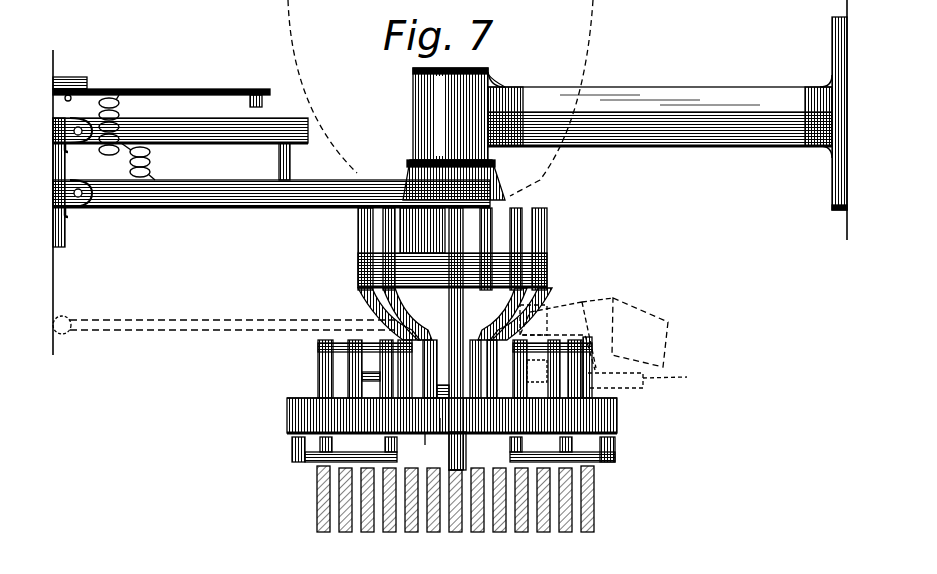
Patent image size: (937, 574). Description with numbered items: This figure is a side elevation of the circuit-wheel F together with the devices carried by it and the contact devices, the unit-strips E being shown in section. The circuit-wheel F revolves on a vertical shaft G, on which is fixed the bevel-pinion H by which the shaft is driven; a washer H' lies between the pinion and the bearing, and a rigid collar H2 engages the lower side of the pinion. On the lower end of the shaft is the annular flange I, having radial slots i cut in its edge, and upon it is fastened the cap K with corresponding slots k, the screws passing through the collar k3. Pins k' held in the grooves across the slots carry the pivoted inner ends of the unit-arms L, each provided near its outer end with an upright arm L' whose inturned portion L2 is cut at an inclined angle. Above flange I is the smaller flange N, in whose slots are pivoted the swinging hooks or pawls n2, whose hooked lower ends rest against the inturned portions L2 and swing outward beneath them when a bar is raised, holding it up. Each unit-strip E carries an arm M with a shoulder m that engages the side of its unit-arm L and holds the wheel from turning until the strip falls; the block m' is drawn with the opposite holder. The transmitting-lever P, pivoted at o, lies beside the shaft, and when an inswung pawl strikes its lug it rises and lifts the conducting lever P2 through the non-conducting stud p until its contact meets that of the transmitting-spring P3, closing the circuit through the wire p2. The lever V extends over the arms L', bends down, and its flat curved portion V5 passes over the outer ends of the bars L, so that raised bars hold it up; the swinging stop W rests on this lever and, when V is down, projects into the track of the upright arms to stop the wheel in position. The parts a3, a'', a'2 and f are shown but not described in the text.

The transmitting-spring P3 is at (161, 85).
The conducting lever P2 is at (180, 142).
The transmitting-lever P is at (271, 206).
The pin or stud p is at (263, 101).
The wire p2 is at (119, 103).
The pivot o is at (80, 180).
The hub shoulder a3 is at (489, 74).
The hub top a'' is at (442, 93).
The shaft arm a'2 is at (667, 113).
The bevel-pinion H is at (440, 119).
The washer H' is at (469, 177).
The rigid collar H2 is at (413, 212).
The second flange N is at (358, 265).
The swinging hook or pawl n2 is at (537, 314).
The circuit-wheel F is at (548, 276).
The central pin f is at (460, 228).
The inturned portion L2 is at (566, 331).
The swinging stop W is at (660, 320).
The pin k' is at (615, 370).
The flat curved portion V5 is at (678, 377).
The radial slot k is at (537, 377).
The collar k3 is at (483, 369).
The shaft G is at (429, 369).
The upright arm L' is at (401, 368).
The unit-arm L is at (434, 410).
The shoulder or projection m is at (351, 445).
The block m' is at (551, 444).
The engaging arm M is at (325, 462).
The radial slot i is at (415, 446).
The annular flange I is at (440, 418).
The cap K is at (467, 455).
The unit-strip E is at (451, 509).
The lever V is at (224, 334).